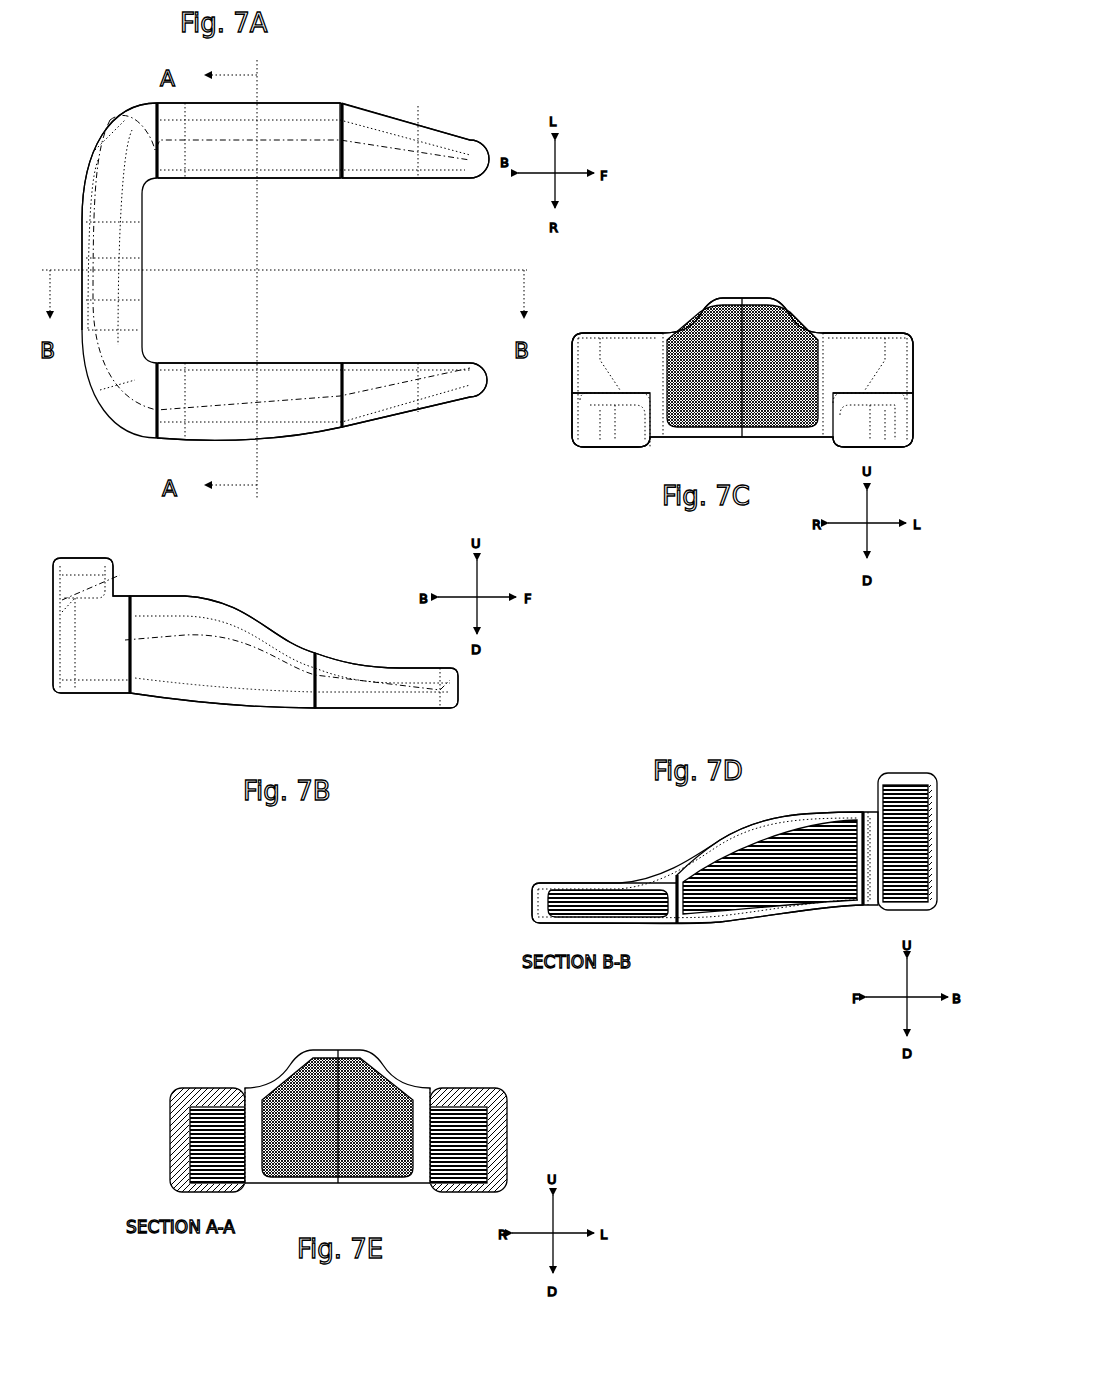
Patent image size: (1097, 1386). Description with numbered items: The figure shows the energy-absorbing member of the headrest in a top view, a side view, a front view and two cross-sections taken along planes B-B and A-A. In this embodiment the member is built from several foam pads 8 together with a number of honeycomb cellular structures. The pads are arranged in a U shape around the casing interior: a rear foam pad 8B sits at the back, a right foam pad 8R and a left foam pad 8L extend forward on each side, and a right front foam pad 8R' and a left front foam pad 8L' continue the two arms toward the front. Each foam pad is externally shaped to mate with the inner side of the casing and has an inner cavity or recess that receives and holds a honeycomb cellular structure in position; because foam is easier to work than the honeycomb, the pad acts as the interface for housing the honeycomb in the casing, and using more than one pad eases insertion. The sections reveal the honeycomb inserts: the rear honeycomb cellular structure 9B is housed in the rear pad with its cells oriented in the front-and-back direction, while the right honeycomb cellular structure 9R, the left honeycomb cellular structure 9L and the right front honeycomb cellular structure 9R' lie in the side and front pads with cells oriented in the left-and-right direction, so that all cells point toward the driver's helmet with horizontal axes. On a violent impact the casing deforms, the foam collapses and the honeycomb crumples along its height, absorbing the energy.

In FIG. 7C, the foam pad 8 is at (826, 350).
In FIG. 7A, the rear foam pad 8B is at (121, 190).
In FIG. 7C, the rear foam pad 8B is at (681, 328).
In FIG. 7B, the rear foam pad 8B is at (97, 668).
In FIG. 7D, the rear foam pad 8B is at (907, 775).
In FIG. 7E, the rear foam pad 8B is at (306, 1050).
In FIG. 7A, the left foam pad 8L is at (248, 110).
In FIG. 7C, the left foam pad 8L is at (868, 334).
In FIG. 7E, the left foam pad 8L is at (497, 1140).
In FIG. 7A, the left front foam pad 8L' is at (415, 127).
In FIG. 7C, the left front foam pad 8L' is at (853, 439).
In FIG. 7A, the right foam pad 8R is at (249, 429).
In FIG. 7C, the right foam pad 8R is at (584, 397).
In FIG. 7B, the right foam pad 8R is at (222, 669).
In FIG. 7D, the right foam pad 8R is at (770, 892).
In FIG. 7E, the right foam pad 8R is at (161, 1140).
In FIG. 7A, the right front foam pad 8R' is at (414, 419).
In FIG. 7C, the right front foam pad 8R' is at (611, 452).
In FIG. 7B, the right front foam pad 8R' is at (386, 705).
In FIG. 7D, the right front foam pad 8R' is at (604, 868).
In FIG. 7C, the rear honeycomb cellular structure 9B is at (763, 306).
In FIG. 7D, the rear honeycomb cellular structure 9B is at (876, 798).
In FIG. 7E, the rear honeycomb cellular structure 9B is at (373, 1066).
In FIG. 7E, the left honeycomb cellular structure 9L is at (476, 1108).
In FIG. 7D, the right honeycomb cellular structure 9R is at (770, 902).
In FIG. 7E, the right honeycomb cellular structure 9R is at (217, 1103).
In FIG. 7D, the right front honeycomb cellular structure 9R' is at (608, 872).